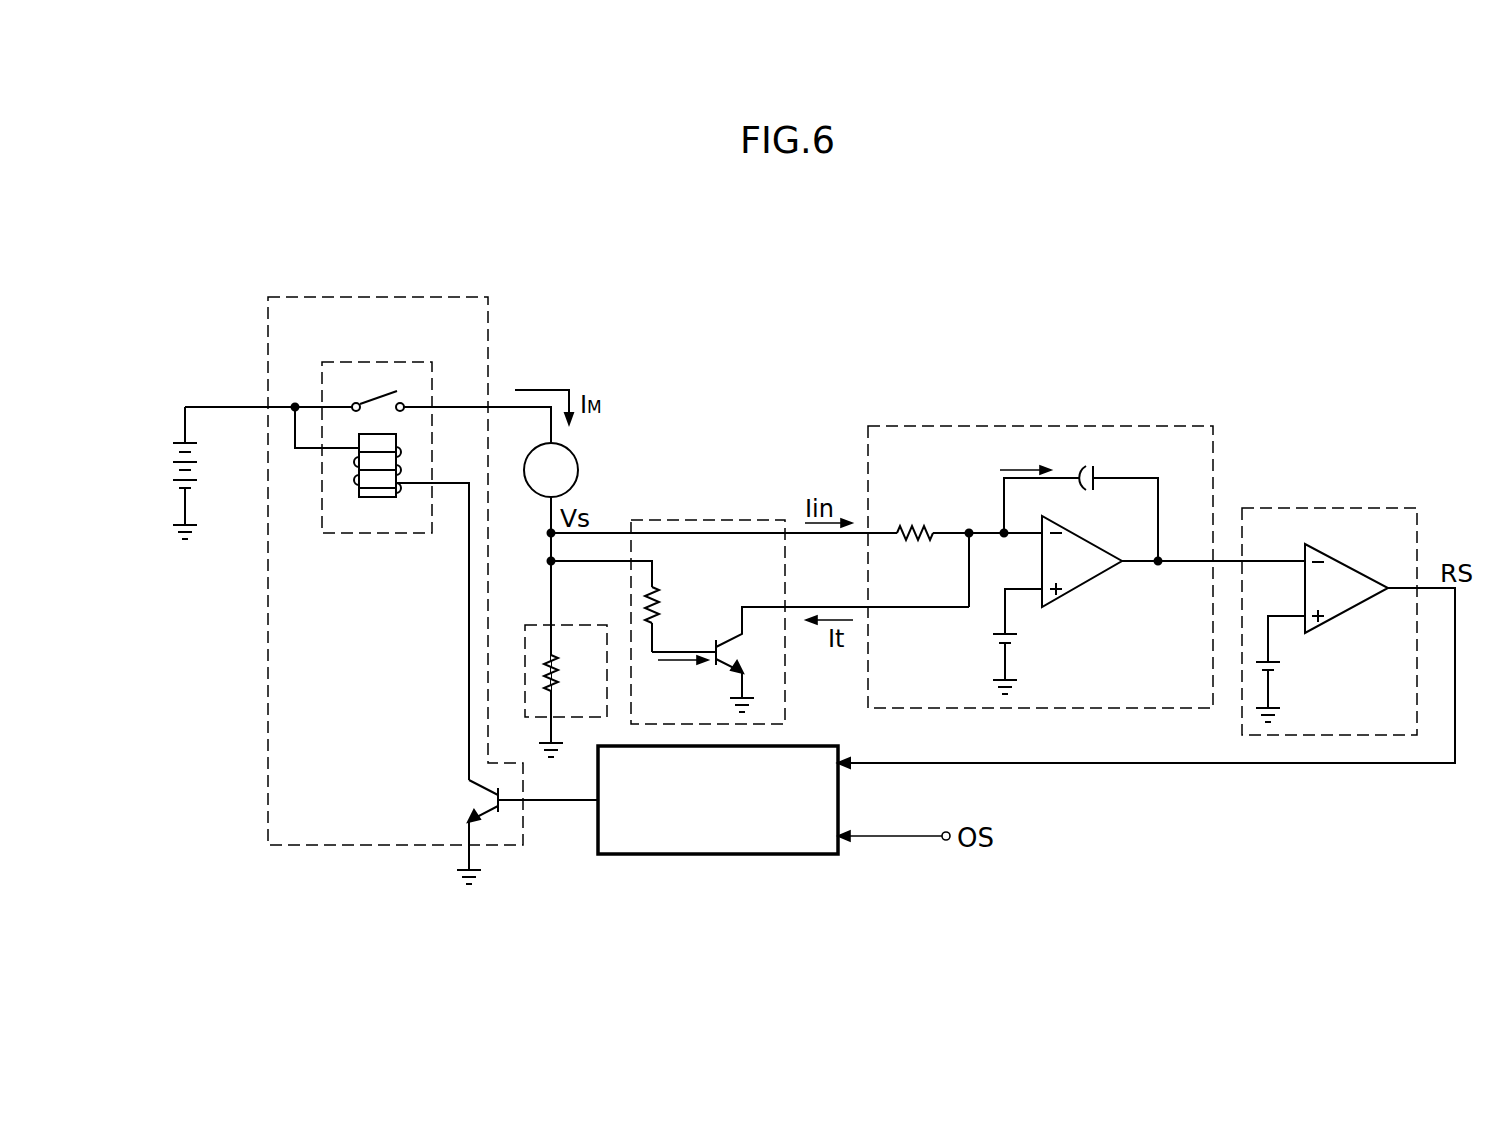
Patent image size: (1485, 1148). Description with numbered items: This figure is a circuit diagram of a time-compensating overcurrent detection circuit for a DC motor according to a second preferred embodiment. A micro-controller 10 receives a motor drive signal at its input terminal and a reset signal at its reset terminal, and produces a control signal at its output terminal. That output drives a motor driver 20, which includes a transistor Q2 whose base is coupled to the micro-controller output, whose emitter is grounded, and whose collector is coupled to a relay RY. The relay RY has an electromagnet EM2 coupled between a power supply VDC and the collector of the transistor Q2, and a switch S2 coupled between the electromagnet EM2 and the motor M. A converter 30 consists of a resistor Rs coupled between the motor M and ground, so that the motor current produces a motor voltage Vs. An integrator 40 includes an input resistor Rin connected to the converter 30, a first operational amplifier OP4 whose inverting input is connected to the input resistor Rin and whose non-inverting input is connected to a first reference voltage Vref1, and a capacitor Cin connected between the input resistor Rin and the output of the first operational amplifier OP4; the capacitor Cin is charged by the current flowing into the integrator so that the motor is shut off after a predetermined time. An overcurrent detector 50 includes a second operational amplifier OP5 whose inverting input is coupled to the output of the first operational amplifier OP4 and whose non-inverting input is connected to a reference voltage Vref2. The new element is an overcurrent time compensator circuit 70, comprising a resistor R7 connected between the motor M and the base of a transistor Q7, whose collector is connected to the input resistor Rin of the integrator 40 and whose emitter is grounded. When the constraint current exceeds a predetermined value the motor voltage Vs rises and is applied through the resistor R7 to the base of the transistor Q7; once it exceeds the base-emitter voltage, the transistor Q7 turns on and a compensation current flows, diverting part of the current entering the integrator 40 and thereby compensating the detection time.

The micro-controller 10 is at (713, 856).
The motor driver 20 is at (268, 340).
The converter 30 is at (578, 625).
The integrator 40 is at (1056, 424).
The overcurrent detector 50 is at (1323, 504).
The overcurrent time compensator circuit 70 is at (703, 520).
The relay RY is at (377, 362).
The switch S2 is at (368, 406).
The electromagnet EM2 is at (382, 593).
The motor M is at (551, 470).
The power supply VDC is at (160, 473).
The resistor Rs is at (568, 673).
The resistor R7 is at (623, 606).
The transistor Q7 is at (810, 659).
The transistor Q2 is at (519, 832).
The input resistor Rin is at (917, 521).
The capacitor Cin is at (1081, 499).
The first operational amplifier OP4 is at (1085, 585).
The second operational amplifier OP5 is at (1349, 565).
The first reference voltage Vref1 is at (977, 641).
The reference voltage Vref2 is at (1310, 669).